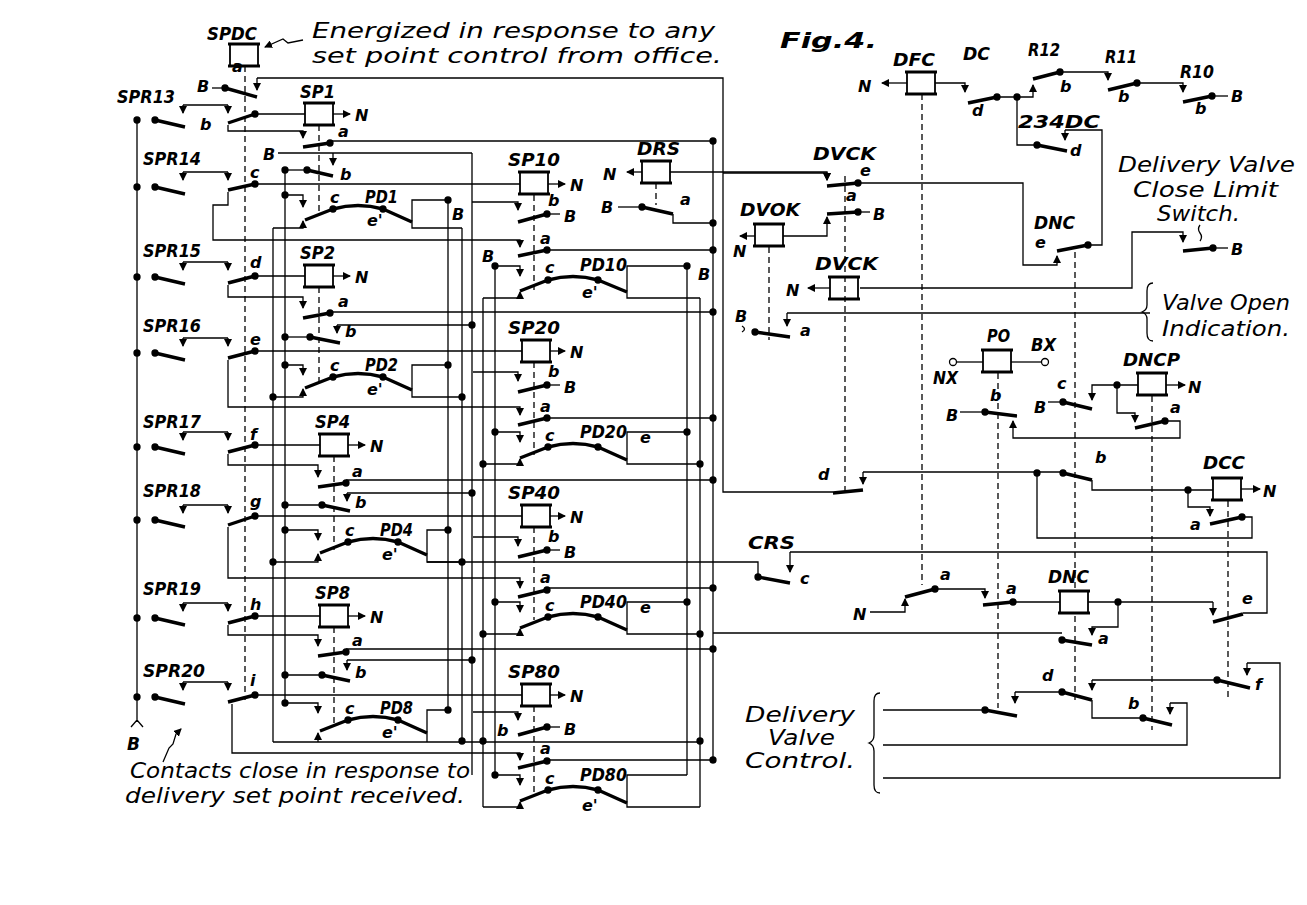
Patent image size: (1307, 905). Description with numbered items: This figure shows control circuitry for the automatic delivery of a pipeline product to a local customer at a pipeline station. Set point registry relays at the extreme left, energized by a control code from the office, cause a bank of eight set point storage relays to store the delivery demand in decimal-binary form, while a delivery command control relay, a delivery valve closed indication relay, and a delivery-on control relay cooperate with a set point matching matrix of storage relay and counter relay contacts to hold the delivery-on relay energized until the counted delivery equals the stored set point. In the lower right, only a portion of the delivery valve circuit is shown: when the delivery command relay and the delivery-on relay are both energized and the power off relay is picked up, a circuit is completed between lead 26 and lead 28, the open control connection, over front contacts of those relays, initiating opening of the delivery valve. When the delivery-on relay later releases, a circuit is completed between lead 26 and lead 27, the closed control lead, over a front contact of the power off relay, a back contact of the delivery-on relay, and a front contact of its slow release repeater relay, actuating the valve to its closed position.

The lead 26 is at (940, 705).
The lead 27 is at (988, 732).
The lead 28 is at (988, 765).